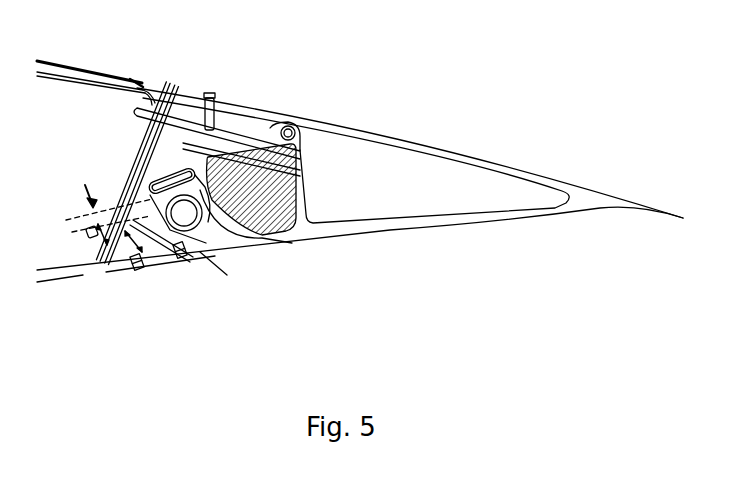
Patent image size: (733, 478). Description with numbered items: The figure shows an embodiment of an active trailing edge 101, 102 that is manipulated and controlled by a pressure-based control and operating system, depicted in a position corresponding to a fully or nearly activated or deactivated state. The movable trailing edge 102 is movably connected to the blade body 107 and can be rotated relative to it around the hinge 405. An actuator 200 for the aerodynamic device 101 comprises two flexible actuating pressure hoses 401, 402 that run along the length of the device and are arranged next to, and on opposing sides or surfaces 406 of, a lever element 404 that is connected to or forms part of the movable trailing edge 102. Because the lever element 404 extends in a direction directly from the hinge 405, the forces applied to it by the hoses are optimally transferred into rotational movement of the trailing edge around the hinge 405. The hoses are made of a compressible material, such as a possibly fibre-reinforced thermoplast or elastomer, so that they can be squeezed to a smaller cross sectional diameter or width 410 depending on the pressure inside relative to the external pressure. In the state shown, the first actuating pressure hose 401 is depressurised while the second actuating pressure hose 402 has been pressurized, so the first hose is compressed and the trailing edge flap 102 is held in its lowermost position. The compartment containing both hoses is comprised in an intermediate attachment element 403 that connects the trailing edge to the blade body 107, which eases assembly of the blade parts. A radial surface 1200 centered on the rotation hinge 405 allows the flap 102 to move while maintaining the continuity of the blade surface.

The aerodynamic device 101 is at (418, 168).
The movable trailing edge 102 is at (418, 168).
The blade body 107 is at (187, 92).
The actuator 200 is at (180, 225).
The first actuating pressure hose 401 is at (138, 177).
The second actuating pressure hose 402 is at (170, 230).
The intermediate attachment element 403 is at (232, 120).
The lever element 404 is at (180, 225).
The hinge 405 is at (293, 128).
The opposing surfaces of the lever element 406 is at (175, 215).
The cross sectional diameter or width 410 is at (97, 207).
The radial surface 1200 is at (267, 242).